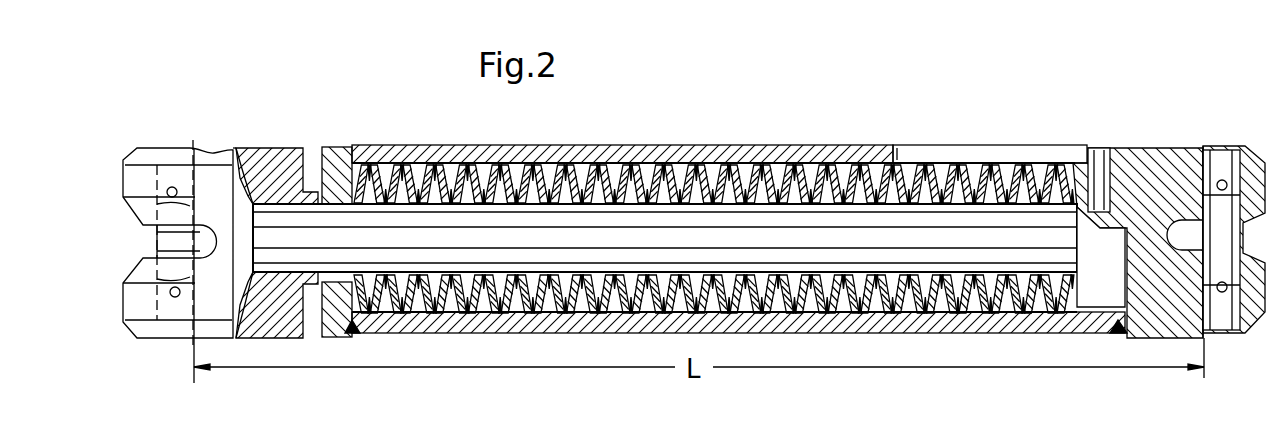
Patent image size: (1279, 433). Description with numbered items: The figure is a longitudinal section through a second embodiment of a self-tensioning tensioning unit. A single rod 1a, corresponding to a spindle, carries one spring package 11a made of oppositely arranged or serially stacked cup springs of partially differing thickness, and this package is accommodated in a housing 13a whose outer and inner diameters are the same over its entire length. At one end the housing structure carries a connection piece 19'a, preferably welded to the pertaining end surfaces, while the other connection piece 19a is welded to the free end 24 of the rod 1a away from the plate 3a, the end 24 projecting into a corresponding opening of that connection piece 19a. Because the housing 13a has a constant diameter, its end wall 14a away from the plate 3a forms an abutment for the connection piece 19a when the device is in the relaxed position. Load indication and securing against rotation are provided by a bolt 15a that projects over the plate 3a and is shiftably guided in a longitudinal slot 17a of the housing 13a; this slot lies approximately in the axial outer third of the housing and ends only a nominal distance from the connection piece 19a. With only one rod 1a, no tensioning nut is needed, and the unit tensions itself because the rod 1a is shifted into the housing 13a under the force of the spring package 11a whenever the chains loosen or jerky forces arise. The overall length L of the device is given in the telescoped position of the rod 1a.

The rod 1a is at (759, 218).
The plate 3a is at (1098, 302).
The spring package 11a is at (997, 167).
The housing 13a is at (637, 152).
The end wall 14a is at (327, 162).
The bolt 15a is at (1103, 155).
The longitudinal slot 17a is at (1032, 152).
The connection piece 19a is at (213, 170).
The connection piece 19'a is at (1169, 221).
The free end 24 is at (277, 268).